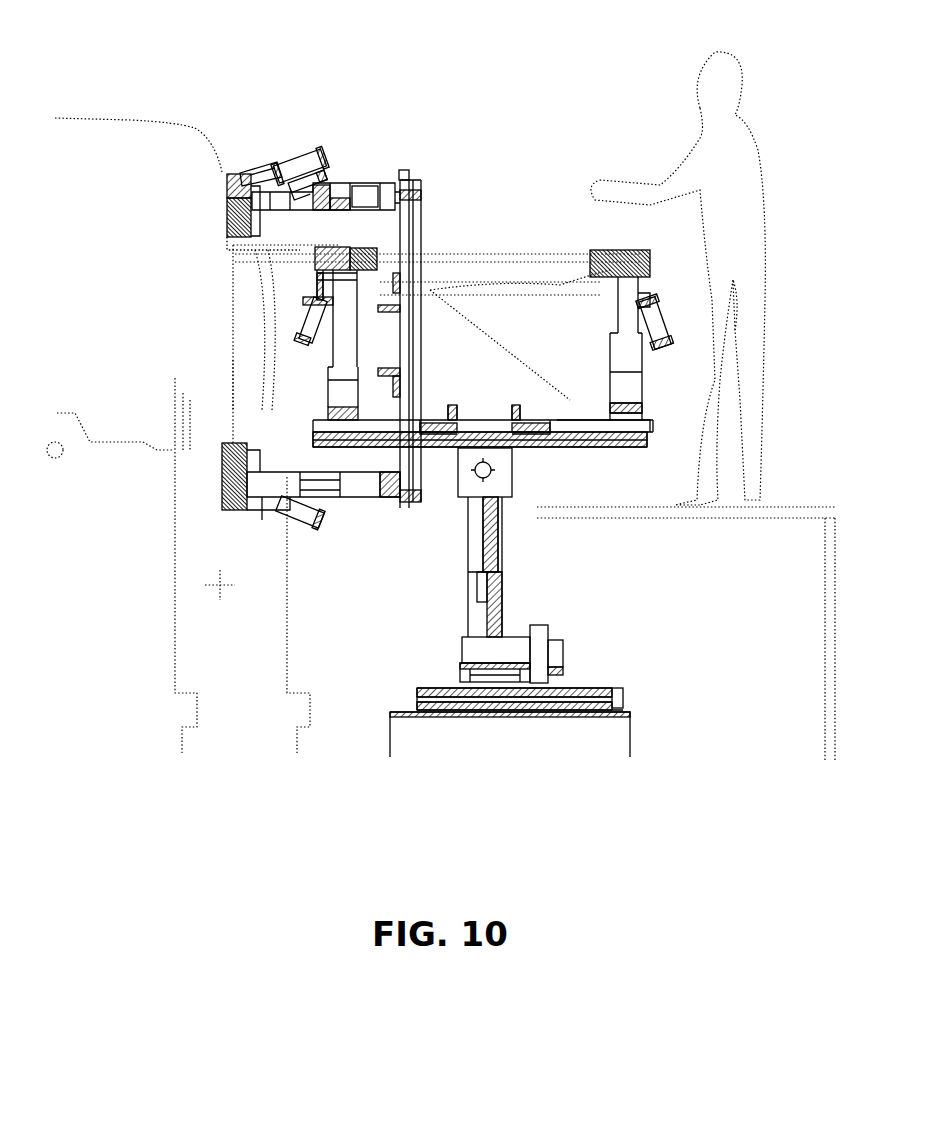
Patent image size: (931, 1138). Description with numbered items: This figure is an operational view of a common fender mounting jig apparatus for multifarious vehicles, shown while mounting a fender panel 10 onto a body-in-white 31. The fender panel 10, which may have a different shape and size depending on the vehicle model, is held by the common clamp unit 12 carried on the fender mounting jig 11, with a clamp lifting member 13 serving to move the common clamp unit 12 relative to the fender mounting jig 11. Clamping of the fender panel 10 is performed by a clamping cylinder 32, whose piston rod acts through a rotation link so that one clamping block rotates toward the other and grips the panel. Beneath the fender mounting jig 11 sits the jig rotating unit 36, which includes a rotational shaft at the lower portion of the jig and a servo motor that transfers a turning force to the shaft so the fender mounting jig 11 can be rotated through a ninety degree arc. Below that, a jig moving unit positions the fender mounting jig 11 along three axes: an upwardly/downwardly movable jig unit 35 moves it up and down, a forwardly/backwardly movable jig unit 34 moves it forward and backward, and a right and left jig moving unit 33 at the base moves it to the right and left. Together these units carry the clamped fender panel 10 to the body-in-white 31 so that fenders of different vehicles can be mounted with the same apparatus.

The fender panel 10 is at (258, 310).
The fender mounting jig 11 is at (428, 218).
The common clamp unit 12 is at (218, 196).
The clamp lifting member 13 is at (341, 194).
The body-in-white 31 is at (132, 118).
The clamping cylinder 32 is at (303, 158).
The right and left jig moving unit 33 is at (571, 696).
The forwardly/backwardly movable jig unit 34 is at (462, 652).
The upwardly/downwardly movable jig unit 35 is at (468, 552).
The jig rotating unit 36 is at (466, 478).